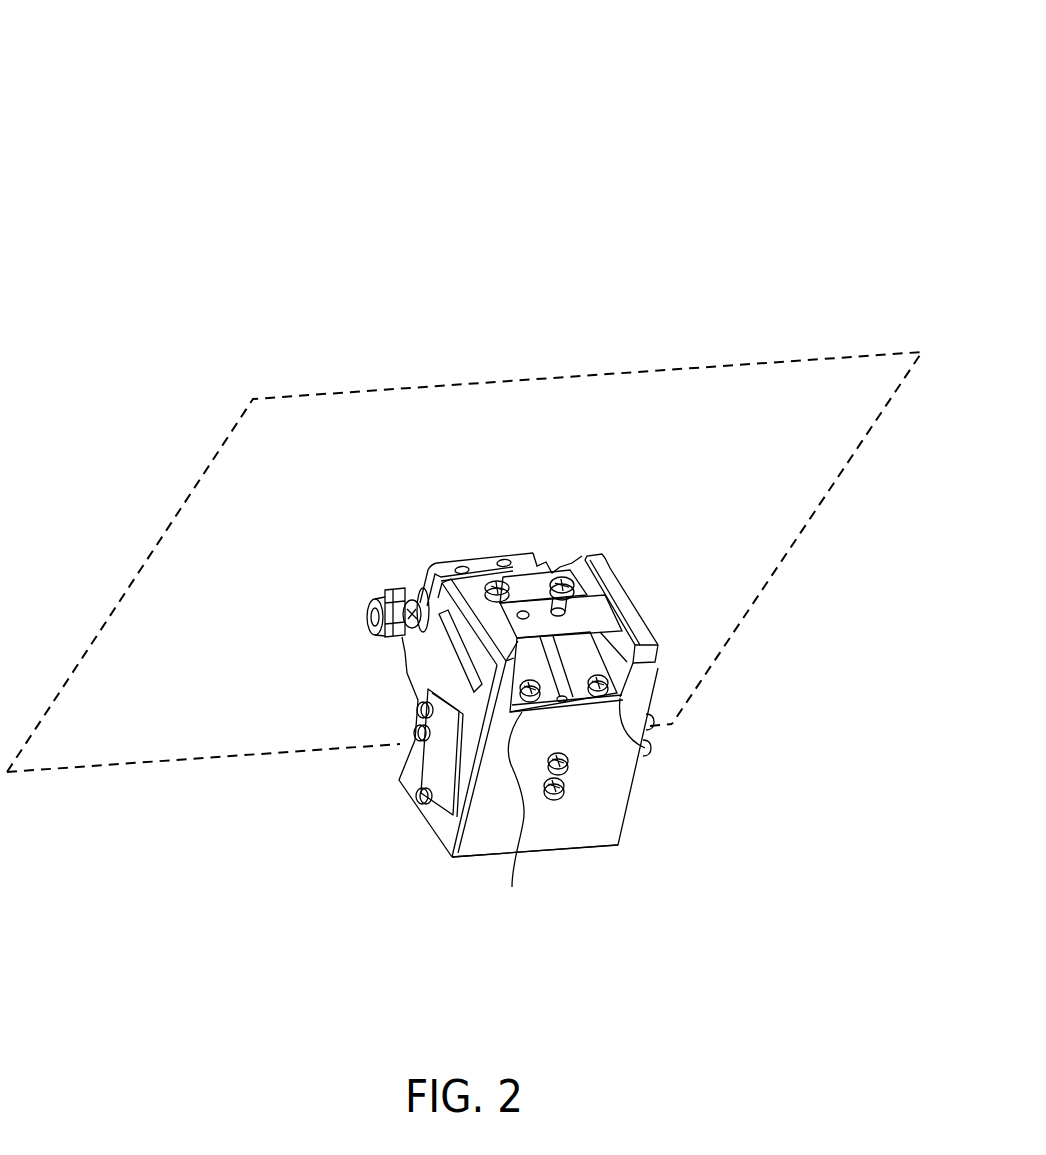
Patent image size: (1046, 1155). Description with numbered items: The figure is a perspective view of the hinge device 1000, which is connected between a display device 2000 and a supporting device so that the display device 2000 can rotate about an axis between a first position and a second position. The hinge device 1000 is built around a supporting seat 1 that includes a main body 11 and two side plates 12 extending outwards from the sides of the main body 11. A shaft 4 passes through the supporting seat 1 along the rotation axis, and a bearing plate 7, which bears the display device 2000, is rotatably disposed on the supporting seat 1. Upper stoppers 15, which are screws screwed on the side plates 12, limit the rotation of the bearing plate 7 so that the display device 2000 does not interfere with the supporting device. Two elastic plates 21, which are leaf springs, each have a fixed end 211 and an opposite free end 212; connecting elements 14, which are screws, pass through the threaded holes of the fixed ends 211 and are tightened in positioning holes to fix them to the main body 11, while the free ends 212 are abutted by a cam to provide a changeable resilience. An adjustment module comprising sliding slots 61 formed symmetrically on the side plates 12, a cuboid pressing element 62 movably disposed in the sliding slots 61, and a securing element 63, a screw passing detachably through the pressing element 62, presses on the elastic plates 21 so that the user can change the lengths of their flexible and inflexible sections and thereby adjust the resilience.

The hinge device 1000 is at (204, 59).
The display device 2000 is at (397, 392).
The supporting seat 1 is at (612, 805).
The main body 11 is at (580, 830).
The side plates 12 is at (406, 666).
The connecting elements 14 is at (510, 884).
The upper stoppers 15 is at (410, 585).
The shaft 4 is at (368, 617).
The bearing plate 7 is at (480, 562).
The elastic plates 21 is at (590, 668).
The fixed end 211 is at (647, 743).
The free end 212 is at (523, 583).
The sliding slots 61 is at (602, 653).
The pressing element 62 is at (585, 628).
The securing element 63 is at (565, 576).